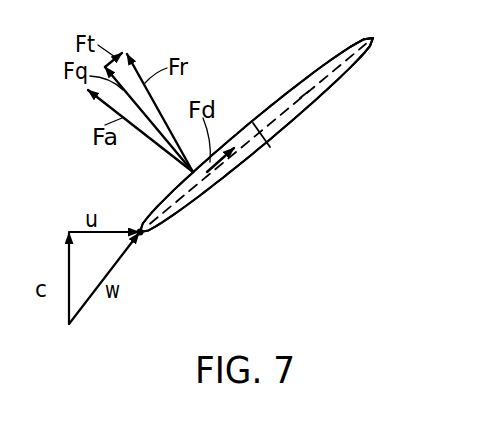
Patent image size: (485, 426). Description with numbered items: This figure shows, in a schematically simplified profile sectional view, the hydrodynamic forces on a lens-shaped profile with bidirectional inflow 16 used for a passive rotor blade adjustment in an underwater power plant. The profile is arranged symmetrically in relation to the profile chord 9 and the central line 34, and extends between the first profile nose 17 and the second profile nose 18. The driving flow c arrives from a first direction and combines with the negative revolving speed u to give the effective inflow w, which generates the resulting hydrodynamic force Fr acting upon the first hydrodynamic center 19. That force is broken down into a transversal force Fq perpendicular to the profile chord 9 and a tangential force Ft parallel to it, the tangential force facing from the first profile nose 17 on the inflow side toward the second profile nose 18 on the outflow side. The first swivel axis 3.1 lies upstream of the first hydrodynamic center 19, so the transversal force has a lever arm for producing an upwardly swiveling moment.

The first swivel axis 3.1 is at (172, 207).
The profile chord 9 is at (305, 95).
The profile with bidirectional inflow 16 is at (347, 72).
The first profile nose 17 is at (137, 228).
The second profile nose 18 is at (374, 38).
The first hydrodynamic center 19 is at (199, 176).
The central line 34 is at (267, 143).